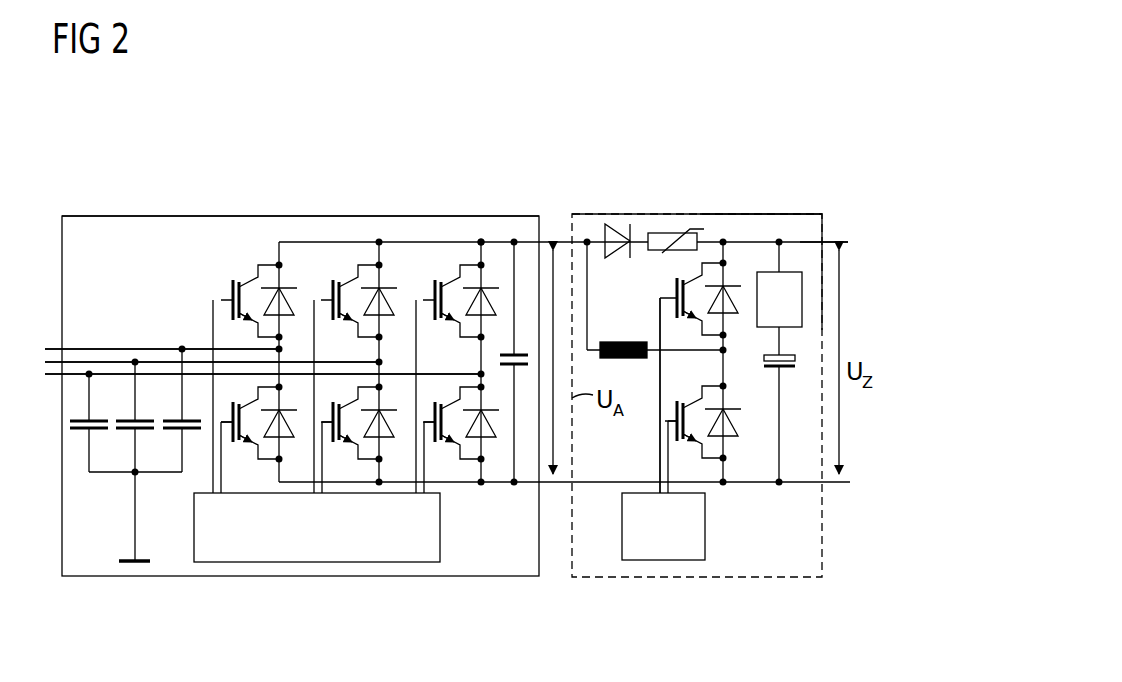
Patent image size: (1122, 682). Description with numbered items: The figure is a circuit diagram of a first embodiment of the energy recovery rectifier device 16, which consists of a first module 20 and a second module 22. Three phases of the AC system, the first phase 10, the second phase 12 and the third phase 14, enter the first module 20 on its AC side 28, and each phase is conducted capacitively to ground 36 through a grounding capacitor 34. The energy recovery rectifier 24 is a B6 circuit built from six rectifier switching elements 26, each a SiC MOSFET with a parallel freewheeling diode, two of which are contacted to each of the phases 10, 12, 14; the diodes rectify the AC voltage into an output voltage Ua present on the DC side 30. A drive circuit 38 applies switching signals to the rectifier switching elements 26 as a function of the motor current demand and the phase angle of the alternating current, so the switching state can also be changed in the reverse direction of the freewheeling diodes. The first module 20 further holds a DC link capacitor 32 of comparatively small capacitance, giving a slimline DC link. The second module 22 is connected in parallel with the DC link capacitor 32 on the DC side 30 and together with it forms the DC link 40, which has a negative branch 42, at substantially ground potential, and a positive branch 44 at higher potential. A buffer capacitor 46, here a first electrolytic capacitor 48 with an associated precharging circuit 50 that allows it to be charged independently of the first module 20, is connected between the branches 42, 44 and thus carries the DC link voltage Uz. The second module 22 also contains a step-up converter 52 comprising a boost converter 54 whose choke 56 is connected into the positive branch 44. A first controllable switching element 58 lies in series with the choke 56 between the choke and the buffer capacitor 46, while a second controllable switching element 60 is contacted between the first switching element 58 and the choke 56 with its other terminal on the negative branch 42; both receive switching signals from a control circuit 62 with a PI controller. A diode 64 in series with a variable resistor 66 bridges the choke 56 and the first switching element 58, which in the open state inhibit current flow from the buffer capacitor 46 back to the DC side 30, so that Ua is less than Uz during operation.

The first phase 10 is at (75, 349).
The second phase 12 is at (120, 362).
The third phase 14 is at (160, 374).
The energy recovery rectifier device 16 is at (103, 152).
The first module 20 is at (186, 578).
The second module 22 is at (770, 577).
The energy recovery rectifier 24 is at (308, 232).
The rectifier switching element 26 is at (215, 282).
The AC side 28 is at (107, 330).
The DC side 30 is at (490, 235).
The DC link capacitor 32 is at (514, 458).
The grounding capacitor 34 is at (82, 431).
The ground 36 is at (140, 578).
The drive circuit 38 is at (316, 562).
The DC link 40 is at (799, 550).
The negative branch 42 is at (590, 482).
The positive branch 44 is at (581, 228).
The buffer capacitor 46 is at (798, 349).
The first electrolytic capacitor 48 is at (787, 372).
The precharging circuit 50 is at (791, 270).
The step-up converter 52 is at (748, 235).
The boost converter 54 is at (640, 422).
The choke 56 is at (623, 342).
The first controllable switching element 58 is at (736, 268).
The second controllable switching element 60 is at (745, 452).
The control circuit 62 is at (680, 560).
The diode 64 is at (618, 228).
The variable resistor 66 is at (663, 232).